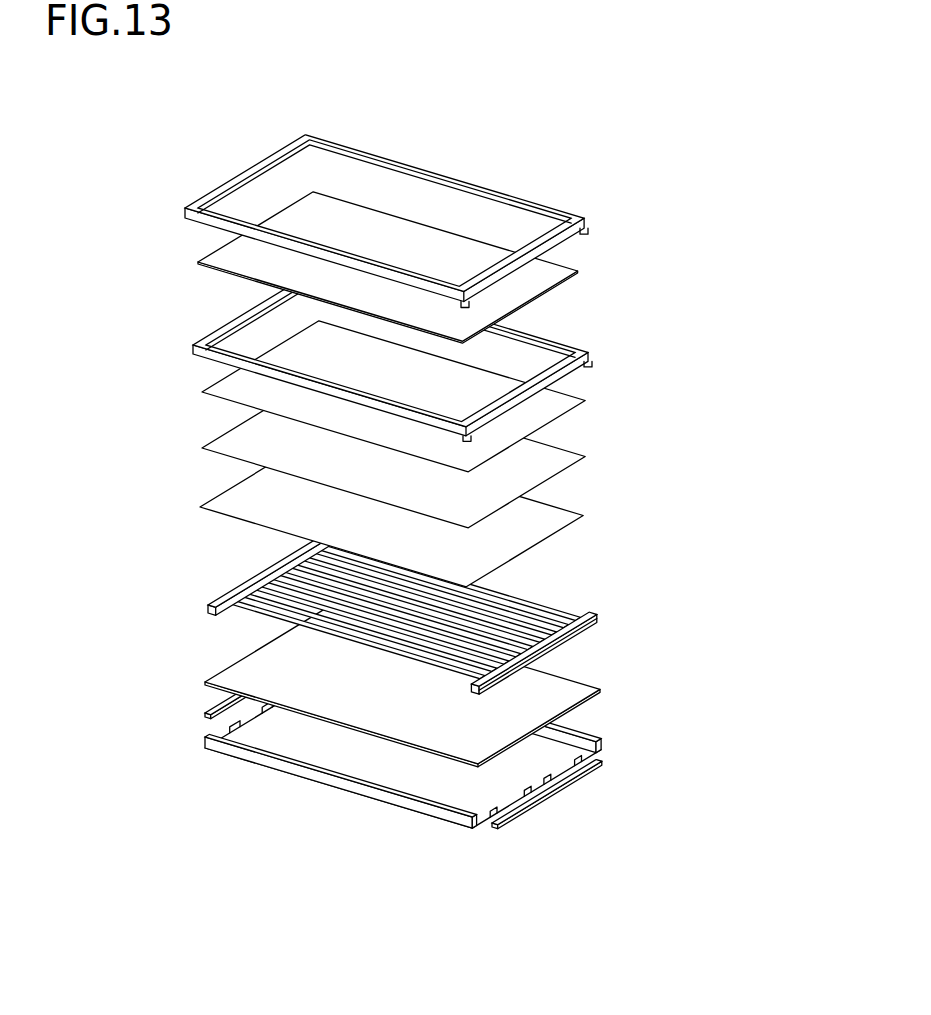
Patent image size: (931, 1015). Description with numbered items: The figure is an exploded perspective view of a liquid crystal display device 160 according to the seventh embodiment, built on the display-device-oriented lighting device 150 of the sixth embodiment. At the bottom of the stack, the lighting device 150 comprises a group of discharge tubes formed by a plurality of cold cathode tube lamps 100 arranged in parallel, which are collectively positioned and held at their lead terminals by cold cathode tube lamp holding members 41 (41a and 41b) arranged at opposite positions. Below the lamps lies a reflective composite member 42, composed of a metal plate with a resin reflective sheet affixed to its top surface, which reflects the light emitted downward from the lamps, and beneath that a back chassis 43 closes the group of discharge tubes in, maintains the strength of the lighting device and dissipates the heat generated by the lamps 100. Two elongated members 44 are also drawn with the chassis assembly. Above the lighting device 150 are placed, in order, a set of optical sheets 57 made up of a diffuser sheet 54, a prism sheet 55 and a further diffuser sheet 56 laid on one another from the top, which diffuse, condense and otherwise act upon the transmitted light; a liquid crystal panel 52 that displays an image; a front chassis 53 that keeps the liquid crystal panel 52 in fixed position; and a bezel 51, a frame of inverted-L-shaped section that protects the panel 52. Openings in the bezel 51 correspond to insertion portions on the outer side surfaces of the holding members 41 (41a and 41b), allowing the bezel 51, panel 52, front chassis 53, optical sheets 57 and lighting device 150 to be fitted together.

The liquid crystal display device 160 is at (449, 497).
The display-device-oriented lighting device 150 is at (449, 707).
The bezel 51 is at (584, 221).
The liquid crystal panel 52 is at (572, 276).
The front chassis 53 is at (586, 354).
The diffuser sheet 54 is at (441, 396).
The prism sheet 55 is at (567, 468).
The diffuser sheet 56 is at (563, 525).
The set of optical sheets 57 is at (471, 454).
The cold cathode tube lamps 100 is at (261, 579).
The cold cathode tube lamp holding members 41 is at (413, 613).
The cold cathode tube lamp holding member 41a is at (207, 610).
The cold cathode tube lamp holding member 41b is at (619, 653).
The reflective composite member 42 is at (598, 680).
The back chassis 43 is at (600, 730).
The support members 44 is at (537, 805).